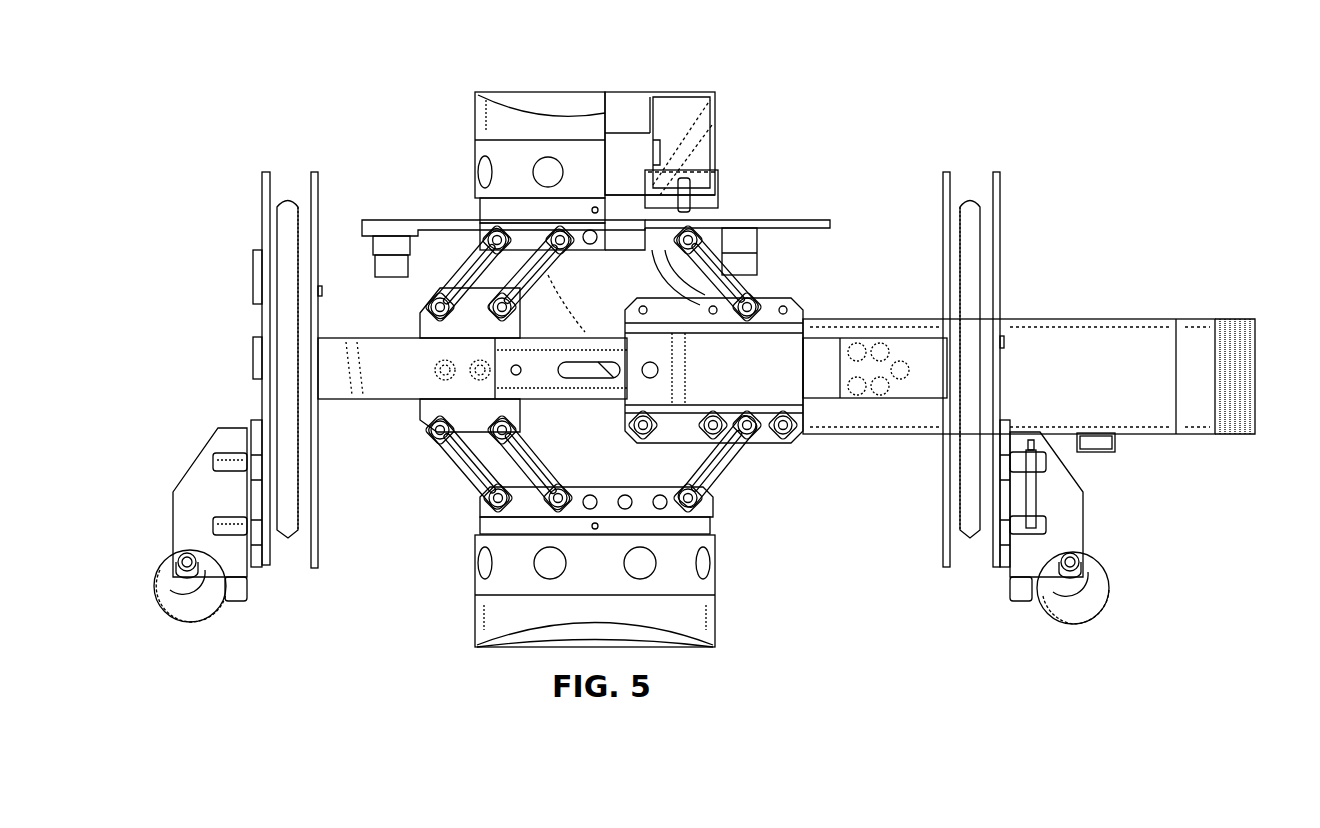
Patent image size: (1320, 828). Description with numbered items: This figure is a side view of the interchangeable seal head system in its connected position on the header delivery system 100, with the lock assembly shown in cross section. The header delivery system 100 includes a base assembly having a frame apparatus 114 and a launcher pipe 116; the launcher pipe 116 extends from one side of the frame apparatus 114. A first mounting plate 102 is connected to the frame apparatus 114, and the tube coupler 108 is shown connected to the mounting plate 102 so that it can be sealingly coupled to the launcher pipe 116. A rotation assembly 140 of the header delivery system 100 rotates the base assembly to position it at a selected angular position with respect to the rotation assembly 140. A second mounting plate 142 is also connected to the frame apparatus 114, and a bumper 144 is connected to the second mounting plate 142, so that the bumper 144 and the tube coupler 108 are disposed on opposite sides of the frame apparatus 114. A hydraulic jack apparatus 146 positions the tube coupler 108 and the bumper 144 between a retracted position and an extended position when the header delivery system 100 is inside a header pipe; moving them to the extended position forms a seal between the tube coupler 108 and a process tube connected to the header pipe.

The header delivery system 100 is at (270, 101).
The mounting plate 102 is at (478, 212).
The tube coupler 108 is at (519, 88).
The frame apparatus 114 is at (376, 404).
The launcher pipe 116 is at (1106, 318).
The rotation assembly 140 is at (260, 195).
The second mounting plate 142 is at (478, 530).
The bumper 144 is at (700, 650).
The hydraulic jack apparatus 146 is at (752, 446).